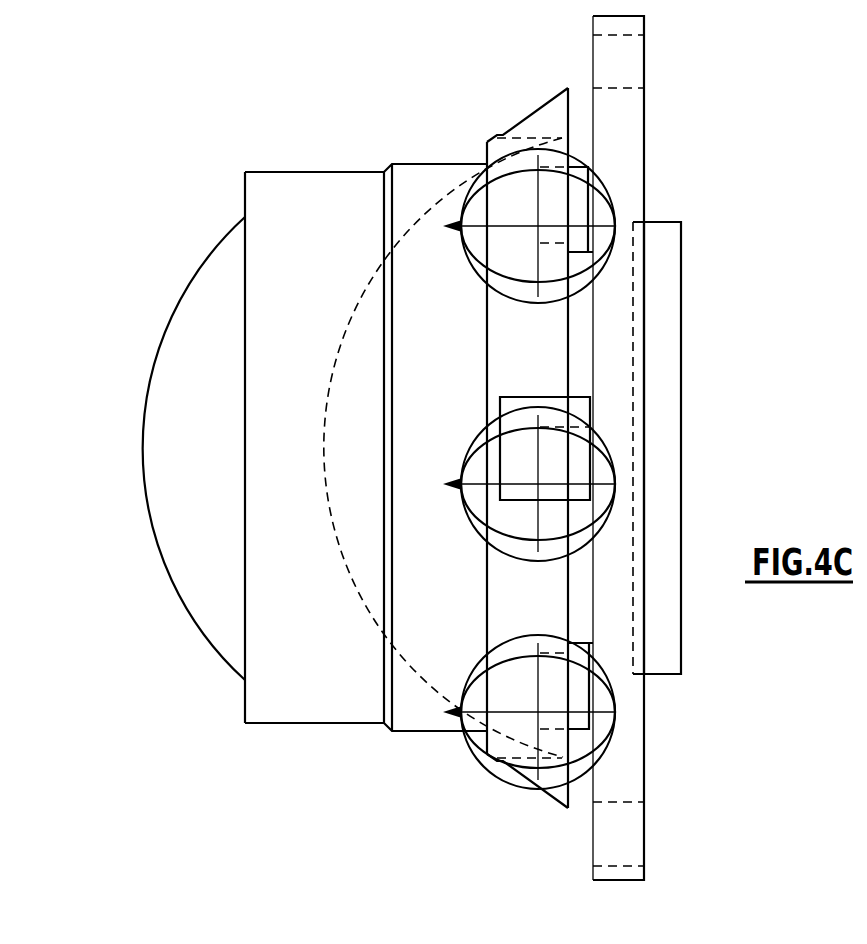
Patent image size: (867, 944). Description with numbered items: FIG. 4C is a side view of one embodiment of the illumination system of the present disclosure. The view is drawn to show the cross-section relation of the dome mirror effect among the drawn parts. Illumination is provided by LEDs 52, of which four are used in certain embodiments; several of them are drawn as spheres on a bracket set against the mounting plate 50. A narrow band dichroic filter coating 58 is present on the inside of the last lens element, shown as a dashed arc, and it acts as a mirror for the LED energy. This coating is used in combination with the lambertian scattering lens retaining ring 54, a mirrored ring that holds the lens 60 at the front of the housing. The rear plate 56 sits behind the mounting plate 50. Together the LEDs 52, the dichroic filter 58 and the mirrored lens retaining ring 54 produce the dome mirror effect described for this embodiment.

The mounting plate 50 is at (583, 365).
The LEDs 52 is at (562, 467).
The lambertian scattering lens retaining ring 54 is at (413, 718).
The plate 56 is at (643, 322).
The narrow band dichroic filter coating 58 is at (333, 523).
The lens 60 is at (144, 487).